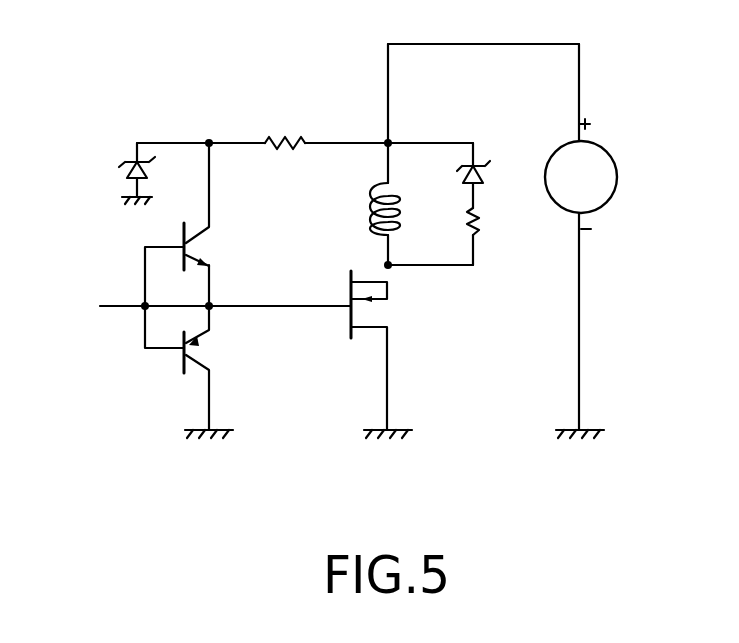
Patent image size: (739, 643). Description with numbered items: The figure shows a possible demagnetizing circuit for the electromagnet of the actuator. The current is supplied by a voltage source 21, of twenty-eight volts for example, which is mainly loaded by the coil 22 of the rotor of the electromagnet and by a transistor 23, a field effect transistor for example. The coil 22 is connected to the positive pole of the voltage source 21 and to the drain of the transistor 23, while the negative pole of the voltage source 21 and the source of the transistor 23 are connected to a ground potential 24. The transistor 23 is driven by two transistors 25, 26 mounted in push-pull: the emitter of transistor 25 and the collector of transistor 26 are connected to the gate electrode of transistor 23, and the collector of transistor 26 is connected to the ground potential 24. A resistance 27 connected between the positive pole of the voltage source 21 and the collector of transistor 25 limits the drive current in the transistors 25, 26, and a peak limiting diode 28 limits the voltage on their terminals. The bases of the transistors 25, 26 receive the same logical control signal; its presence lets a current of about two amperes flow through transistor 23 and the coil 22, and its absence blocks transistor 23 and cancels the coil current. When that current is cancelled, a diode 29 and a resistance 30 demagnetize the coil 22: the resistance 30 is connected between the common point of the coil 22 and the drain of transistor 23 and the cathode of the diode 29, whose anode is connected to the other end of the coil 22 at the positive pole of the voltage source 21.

The voltage source 21 is at (601, 149).
The coil 22 is at (368, 206).
The transistor 23 is at (347, 322).
The ground potential 24 is at (214, 427).
The transistor 25 is at (181, 241).
The transistor 26 is at (177, 366).
The resistance 27 is at (293, 138).
The peak limiting diode 28 is at (118, 176).
The diode 29 is at (485, 181).
The resistance 30 is at (480, 226).